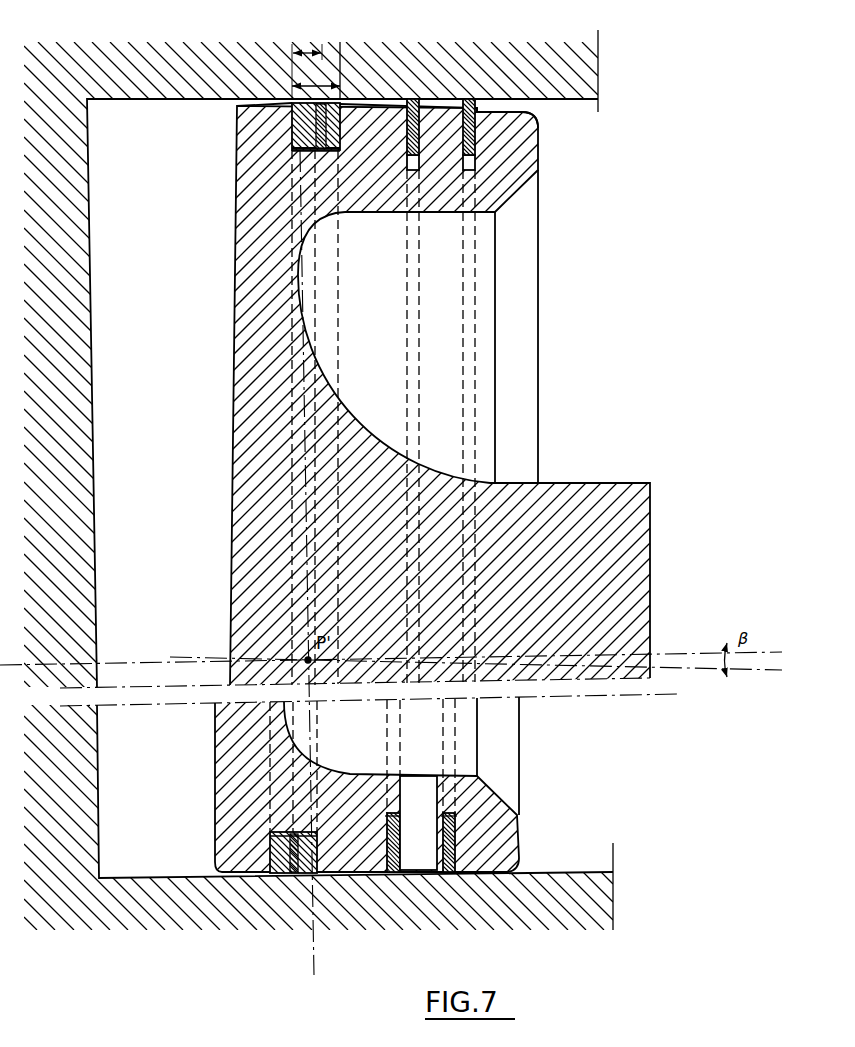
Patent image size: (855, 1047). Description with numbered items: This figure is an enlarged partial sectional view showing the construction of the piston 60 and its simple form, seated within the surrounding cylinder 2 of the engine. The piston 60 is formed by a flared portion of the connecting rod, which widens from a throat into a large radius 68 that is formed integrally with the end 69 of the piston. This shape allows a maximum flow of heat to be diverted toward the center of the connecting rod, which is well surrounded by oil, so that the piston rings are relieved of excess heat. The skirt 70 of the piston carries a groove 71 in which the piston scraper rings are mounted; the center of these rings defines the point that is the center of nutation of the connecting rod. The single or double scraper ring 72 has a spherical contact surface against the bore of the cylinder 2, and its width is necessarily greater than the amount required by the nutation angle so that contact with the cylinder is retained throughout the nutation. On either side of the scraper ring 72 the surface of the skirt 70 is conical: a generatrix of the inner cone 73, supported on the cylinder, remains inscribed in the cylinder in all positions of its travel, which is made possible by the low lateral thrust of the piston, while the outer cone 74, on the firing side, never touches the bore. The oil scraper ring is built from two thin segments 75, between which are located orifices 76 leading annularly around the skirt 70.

The housing 2 is at (513, 98).
The piston 60 is at (562, 482).
The large radius 68 is at (367, 423).
The end of the piston 69 is at (236, 280).
The skirt 70 is at (370, 110).
The groove 71 is at (300, 158).
The scraper ring 72 is at (298, 118).
The inner cone 73 is at (452, 100).
The outer cone 74 is at (281, 100).
The thin segments 75 is at (414, 100).
The orifices 76 is at (420, 795).